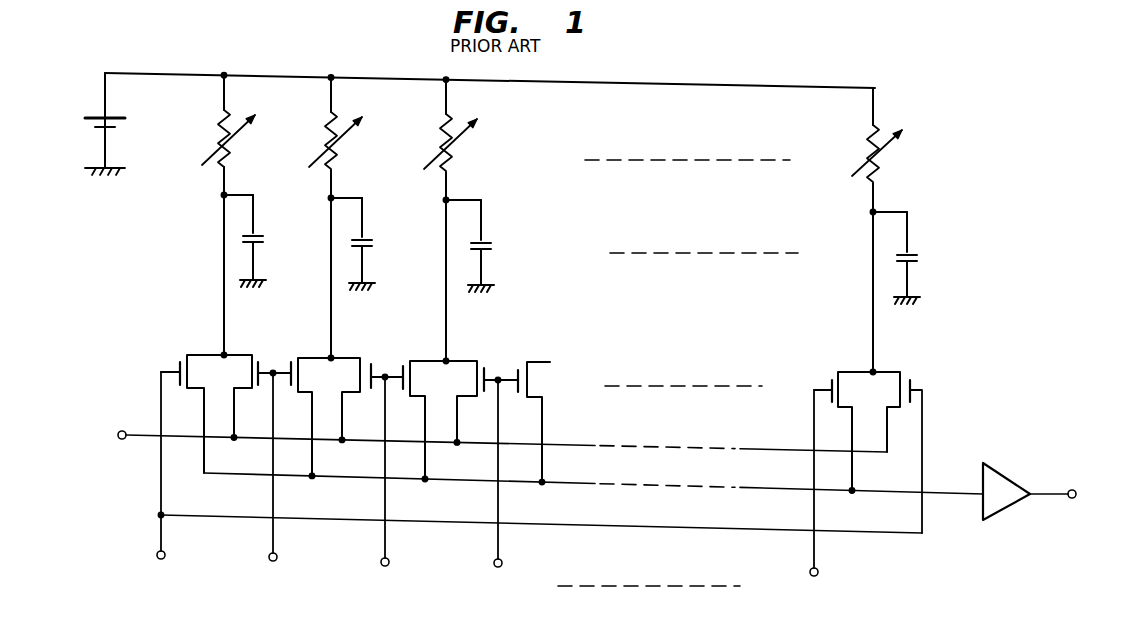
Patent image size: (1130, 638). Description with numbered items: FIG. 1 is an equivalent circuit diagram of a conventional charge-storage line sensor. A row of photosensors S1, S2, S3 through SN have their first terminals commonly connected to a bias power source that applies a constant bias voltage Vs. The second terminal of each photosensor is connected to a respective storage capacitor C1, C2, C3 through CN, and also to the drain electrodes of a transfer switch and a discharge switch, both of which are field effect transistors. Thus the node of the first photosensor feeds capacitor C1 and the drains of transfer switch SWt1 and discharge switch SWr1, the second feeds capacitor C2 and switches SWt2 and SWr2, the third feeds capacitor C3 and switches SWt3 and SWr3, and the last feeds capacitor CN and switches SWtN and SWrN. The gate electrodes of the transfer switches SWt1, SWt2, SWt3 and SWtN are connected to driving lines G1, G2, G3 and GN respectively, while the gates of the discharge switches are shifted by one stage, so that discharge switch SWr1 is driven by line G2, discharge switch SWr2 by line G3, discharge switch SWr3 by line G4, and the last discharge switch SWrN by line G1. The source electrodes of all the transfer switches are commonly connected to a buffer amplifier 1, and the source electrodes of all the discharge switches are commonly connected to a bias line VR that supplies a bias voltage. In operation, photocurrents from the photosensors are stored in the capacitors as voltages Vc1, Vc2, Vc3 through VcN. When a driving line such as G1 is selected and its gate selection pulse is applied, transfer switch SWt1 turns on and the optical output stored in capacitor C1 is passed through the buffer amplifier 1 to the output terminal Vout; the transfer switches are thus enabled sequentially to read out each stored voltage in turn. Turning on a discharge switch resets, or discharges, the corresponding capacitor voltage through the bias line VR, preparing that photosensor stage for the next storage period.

The buffer amplifier 1 is at (1008, 507).
The constant bias voltage Vs is at (128, 126).
The photosensor S1 is at (235, 143).
The photosensor S2 is at (342, 145).
The photosensor S3 is at (457, 150).
The photosensor SN is at (884, 158).
The stored voltage Vc1 is at (256, 195).
The stored voltage Vc2 is at (365, 198).
The stored voltage Vc3 is at (481, 203).
The stored voltage VcN is at (908, 215).
The capacitor C1 is at (265, 241).
The capacitor C2 is at (375, 244).
The capacitor C3 is at (493, 250).
The capacitor CN is at (918, 260).
The transfer switch SWt1 is at (180, 352).
The discharge switch SWr1 is at (258, 356).
The transfer switch SWt2 is at (292, 356).
The discharge switch SWr2 is at (368, 362).
The transfer switch SWt3 is at (406, 359).
The discharge switch SWr3 is at (484, 364).
The transfer switch SWtN is at (832, 378).
The discharge switch SWrN is at (909, 378).
The bias line VR is at (487, 437).
The driving line G1 is at (161, 479).
The driving line G2 is at (273, 478).
The driving line G3 is at (384, 484).
The driving line G4 is at (499, 485).
The driving line GN is at (812, 496).
The output terminal Vout is at (1096, 495).